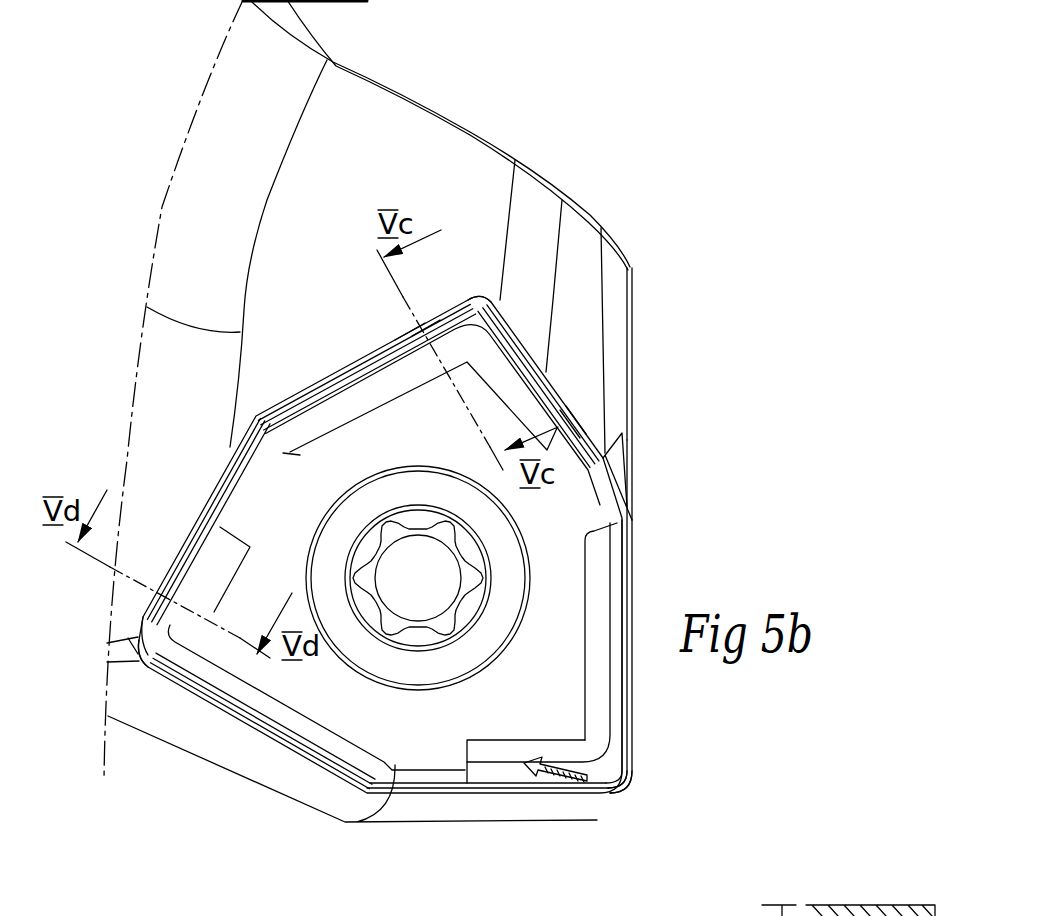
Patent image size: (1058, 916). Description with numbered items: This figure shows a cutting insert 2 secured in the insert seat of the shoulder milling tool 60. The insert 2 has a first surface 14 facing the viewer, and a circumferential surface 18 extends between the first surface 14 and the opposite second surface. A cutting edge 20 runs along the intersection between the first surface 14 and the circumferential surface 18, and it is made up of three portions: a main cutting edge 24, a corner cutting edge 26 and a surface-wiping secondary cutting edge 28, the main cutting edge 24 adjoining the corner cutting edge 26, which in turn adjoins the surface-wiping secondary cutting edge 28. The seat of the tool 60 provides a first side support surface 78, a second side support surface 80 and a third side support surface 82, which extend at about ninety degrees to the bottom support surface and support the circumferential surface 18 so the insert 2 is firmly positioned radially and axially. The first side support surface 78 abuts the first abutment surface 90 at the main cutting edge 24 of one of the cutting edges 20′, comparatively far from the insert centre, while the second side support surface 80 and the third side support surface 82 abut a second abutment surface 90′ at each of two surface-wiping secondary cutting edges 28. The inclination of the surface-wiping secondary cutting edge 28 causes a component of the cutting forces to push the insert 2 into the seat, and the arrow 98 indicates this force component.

The cutting insert 2 is at (380, 822).
The first surface 14 is at (584, 557).
The circumferential surface 18 is at (340, 372).
The cutting edge 20 is at (626, 742).
The cutting edge 20′ is at (505, 295).
The main cutting edge 24 is at (625, 715).
The corner cutting edge 26 is at (616, 785).
The surface-wiping secondary cutting edge 28 is at (538, 798).
The shoulder milling tool 60 is at (526, 160).
The first side support surface 78 is at (481, 294).
The second side support surface 80 is at (547, 373).
The third side support surface 82 is at (189, 556).
The first abutment surface 90 is at (407, 331).
The second abutment surface 90′ is at (572, 417).
The arrow 98 is at (556, 752).